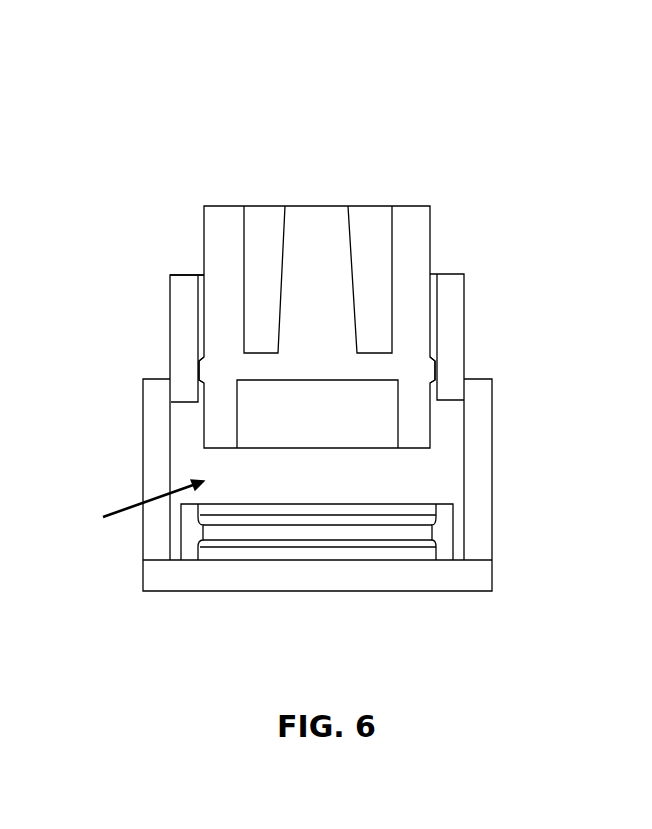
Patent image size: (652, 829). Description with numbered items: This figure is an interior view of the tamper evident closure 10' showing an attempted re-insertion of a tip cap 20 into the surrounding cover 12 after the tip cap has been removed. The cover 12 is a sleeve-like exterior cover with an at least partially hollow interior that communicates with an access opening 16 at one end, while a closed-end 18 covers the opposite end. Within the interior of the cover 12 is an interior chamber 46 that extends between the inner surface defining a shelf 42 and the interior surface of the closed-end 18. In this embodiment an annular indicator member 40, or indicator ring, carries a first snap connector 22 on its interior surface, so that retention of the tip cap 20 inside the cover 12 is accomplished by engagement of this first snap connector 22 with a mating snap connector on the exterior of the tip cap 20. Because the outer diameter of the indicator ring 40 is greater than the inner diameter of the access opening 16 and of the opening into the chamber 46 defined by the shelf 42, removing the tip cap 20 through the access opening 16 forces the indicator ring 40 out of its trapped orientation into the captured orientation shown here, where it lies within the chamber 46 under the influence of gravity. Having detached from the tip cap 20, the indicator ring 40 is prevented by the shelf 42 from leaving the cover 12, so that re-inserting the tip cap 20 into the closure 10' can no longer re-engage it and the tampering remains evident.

The tamper evident closure 10' is at (329, 345).
The exterior cover 12 is at (465, 327).
The access opening 16 is at (202, 275).
The closed-end 18 is at (248, 575).
The tip cap 20 is at (430, 234).
The first snap connector 22 is at (432, 525).
The indicator member 40 is at (190, 545).
The shelf 42 is at (179, 391).
The interior chamber 46 is at (136, 506).